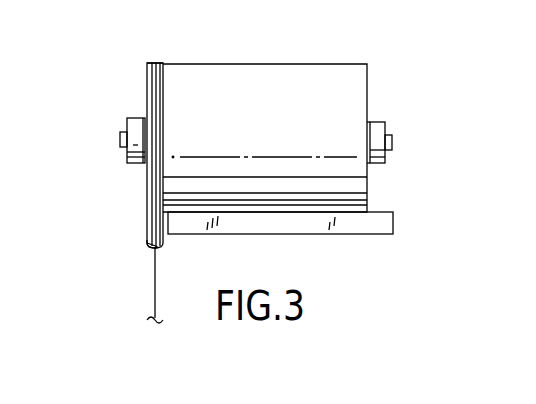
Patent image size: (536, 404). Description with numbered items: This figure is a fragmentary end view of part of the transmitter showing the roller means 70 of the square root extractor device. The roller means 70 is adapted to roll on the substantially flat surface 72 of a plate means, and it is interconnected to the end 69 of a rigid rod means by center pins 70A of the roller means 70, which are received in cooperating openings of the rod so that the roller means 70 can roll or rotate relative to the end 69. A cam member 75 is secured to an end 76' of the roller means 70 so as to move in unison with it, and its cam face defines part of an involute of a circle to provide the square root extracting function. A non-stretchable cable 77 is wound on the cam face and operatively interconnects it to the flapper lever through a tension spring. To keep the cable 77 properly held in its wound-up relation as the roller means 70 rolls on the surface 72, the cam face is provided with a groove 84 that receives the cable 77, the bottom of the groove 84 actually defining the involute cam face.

The groove 84 is at (153, 58).
The roller means 70 is at (252, 65).
The end of the roller means 76' is at (115, 146).
The other end of the rod means 69 is at (130, 122).
The center pins 70A is at (120, 142).
The flat surface 72 is at (378, 213).
The cam member 75 is at (148, 225).
The cable 77 is at (155, 280).